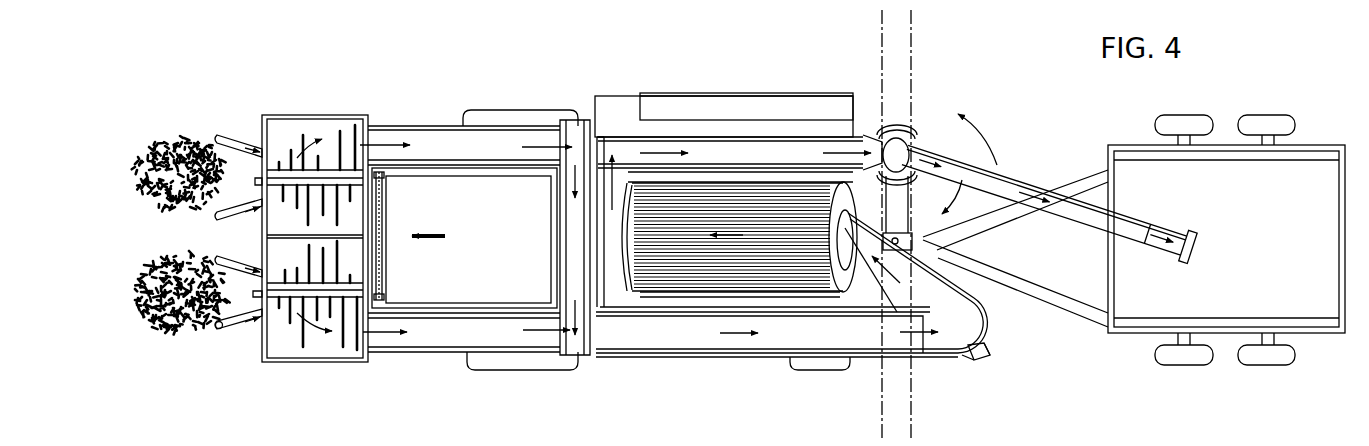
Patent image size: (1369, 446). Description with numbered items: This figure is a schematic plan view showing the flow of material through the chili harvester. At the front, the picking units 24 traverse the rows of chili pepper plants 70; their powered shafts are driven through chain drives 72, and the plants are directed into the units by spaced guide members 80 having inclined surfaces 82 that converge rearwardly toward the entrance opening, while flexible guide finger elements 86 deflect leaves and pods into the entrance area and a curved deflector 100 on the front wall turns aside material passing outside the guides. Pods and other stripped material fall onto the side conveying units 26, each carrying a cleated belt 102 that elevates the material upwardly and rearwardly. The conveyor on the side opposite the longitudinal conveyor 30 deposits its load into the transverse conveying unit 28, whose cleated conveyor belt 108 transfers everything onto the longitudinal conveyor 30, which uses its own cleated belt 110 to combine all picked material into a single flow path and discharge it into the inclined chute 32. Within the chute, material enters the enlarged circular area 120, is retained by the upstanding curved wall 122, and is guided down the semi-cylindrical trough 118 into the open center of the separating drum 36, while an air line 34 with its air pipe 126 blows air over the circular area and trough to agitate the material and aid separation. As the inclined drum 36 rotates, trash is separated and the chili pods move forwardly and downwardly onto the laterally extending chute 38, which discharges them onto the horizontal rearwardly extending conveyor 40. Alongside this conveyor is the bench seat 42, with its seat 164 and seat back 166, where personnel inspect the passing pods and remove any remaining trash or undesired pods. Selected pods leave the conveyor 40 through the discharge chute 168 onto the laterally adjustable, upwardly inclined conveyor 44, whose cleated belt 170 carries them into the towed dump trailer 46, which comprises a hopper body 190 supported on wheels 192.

The picking units 24 is at (322, 114).
The conveying units 26 is at (440, 124).
The transverse conveying unit 28 is at (580, 117).
The longitudinal conveyor 30 is at (708, 359).
The inclined chute 32 is at (955, 285).
The air line 34 is at (993, 353).
The separating drum 36 is at (742, 182).
The chute 38 is at (620, 164).
The rearwardly extending conveyor 40 is at (710, 148).
The bench seat 42 is at (752, 92).
The inclined conveyor 44 is at (990, 178).
The dump trailer 46 is at (1225, 143).
The chili pepper plants 70 is at (175, 150).
The chain drives 72 is at (386, 208).
The guide members 80 is at (245, 326).
The inclined surfaces 82 is at (229, 329).
The flexible guide finger elements 86 is at (259, 276).
The curved deflector 100 is at (261, 132).
The cleated belt 102 is at (408, 130).
The cleated conveyor belt 108 is at (552, 259).
The cleated belt 110 is at (768, 355).
The trough 118 is at (905, 273).
The circular area 120 is at (950, 331).
The upstanding curved wall 122 is at (967, 363).
The air pipe 126 is at (978, 363).
The seat 164 is at (826, 107).
The seat back 166 is at (792, 95).
The discharge chute 168 is at (895, 156).
The cleated belt 170 is at (1005, 205).
The hopper body 190 is at (1305, 318).
The supporting wheels 192 is at (1255, 358).